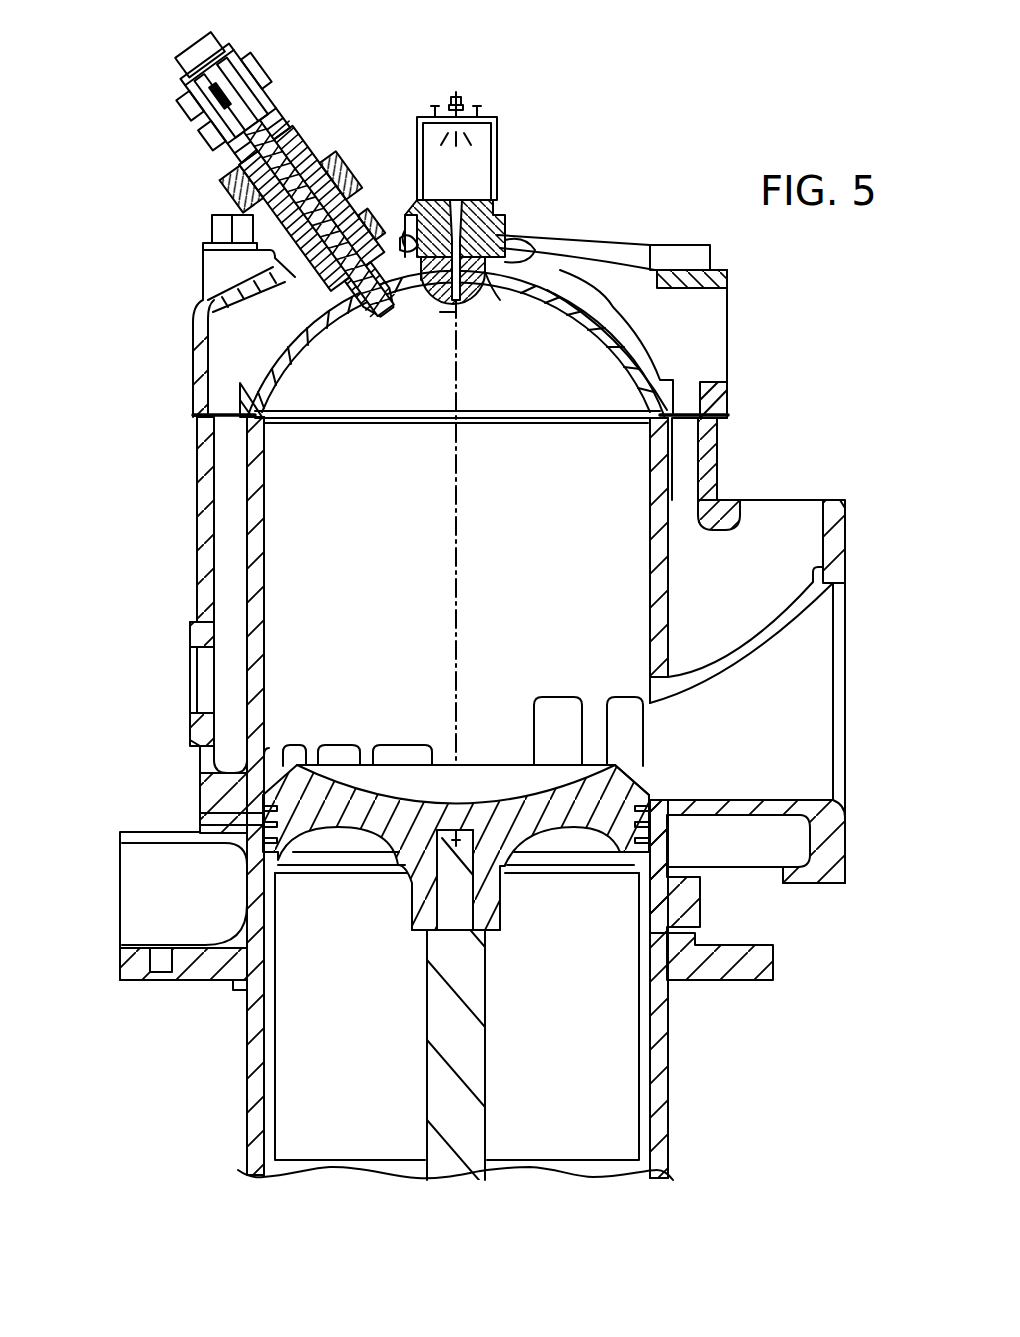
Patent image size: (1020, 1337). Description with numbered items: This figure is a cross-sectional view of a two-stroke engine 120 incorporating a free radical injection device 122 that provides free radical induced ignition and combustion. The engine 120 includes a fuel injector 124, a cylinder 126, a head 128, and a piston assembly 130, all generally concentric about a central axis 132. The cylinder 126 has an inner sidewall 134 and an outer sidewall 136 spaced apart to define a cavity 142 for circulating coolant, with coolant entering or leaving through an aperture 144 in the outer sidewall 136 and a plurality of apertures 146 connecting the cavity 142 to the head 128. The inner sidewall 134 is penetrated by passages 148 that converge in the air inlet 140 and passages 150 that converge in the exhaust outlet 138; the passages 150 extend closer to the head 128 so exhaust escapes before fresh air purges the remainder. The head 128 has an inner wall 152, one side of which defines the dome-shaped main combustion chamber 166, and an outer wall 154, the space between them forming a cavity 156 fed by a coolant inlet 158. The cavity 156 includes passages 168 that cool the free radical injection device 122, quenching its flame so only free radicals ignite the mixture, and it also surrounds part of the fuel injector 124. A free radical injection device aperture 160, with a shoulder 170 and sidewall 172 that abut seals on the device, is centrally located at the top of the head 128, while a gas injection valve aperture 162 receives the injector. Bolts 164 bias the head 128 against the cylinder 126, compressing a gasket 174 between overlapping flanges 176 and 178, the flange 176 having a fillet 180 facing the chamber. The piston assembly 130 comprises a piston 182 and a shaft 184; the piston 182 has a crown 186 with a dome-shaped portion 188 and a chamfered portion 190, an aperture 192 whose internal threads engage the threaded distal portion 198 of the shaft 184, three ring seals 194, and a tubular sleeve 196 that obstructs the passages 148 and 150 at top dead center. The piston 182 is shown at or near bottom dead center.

The two-stroke engine 120 is at (632, 93).
The free radical injection device 122 is at (502, 195).
The fuel injector 124 is at (300, 112).
The cylinder 126 is at (194, 565).
The head 128 is at (176, 347).
The piston assembly 130 is at (410, 935).
The central axis 132 is at (458, 594).
The inner sidewall 134 is at (262, 598).
The outer sidewall 136 is at (196, 530).
The exhaust outlet 138 is at (830, 748).
The air inlet 140 is at (143, 928).
The cavity 142 is at (232, 556).
The aperture 144 is at (203, 680).
The apertures 146 is at (200, 460).
The passages 148 is at (292, 747).
The passages 150 is at (553, 712).
The inner wall 152 is at (588, 333).
The outer wall 154 is at (548, 244).
The cavity 156 is at (610, 285).
The coolant inlet 158 is at (728, 300).
The free radical injection device aperture 160 is at (490, 300).
The gas injection valve aperture 162 is at (395, 306).
The bolts 164 is at (210, 225).
The main combustion chamber 166 is at (456, 443).
The passages 168 is at (408, 240).
The shoulder 170 is at (440, 300).
The sidewall 172 is at (416, 230).
The gasket 174 is at (718, 428).
The flange 176 is at (264, 428).
The flange 178 is at (240, 398).
The fillet 180 is at (532, 412).
The piston 182 is at (500, 915).
The shaft 184 is at (487, 1068).
The crown 186 is at (447, 758).
The dome-shaped portion 188 is at (512, 772).
The chamfered portion 190 is at (646, 775).
The aperture 192 is at (470, 948).
The seals 194 is at (290, 878).
The sleeve 196 is at (268, 1050).
The distal portion 198 is at (480, 884).